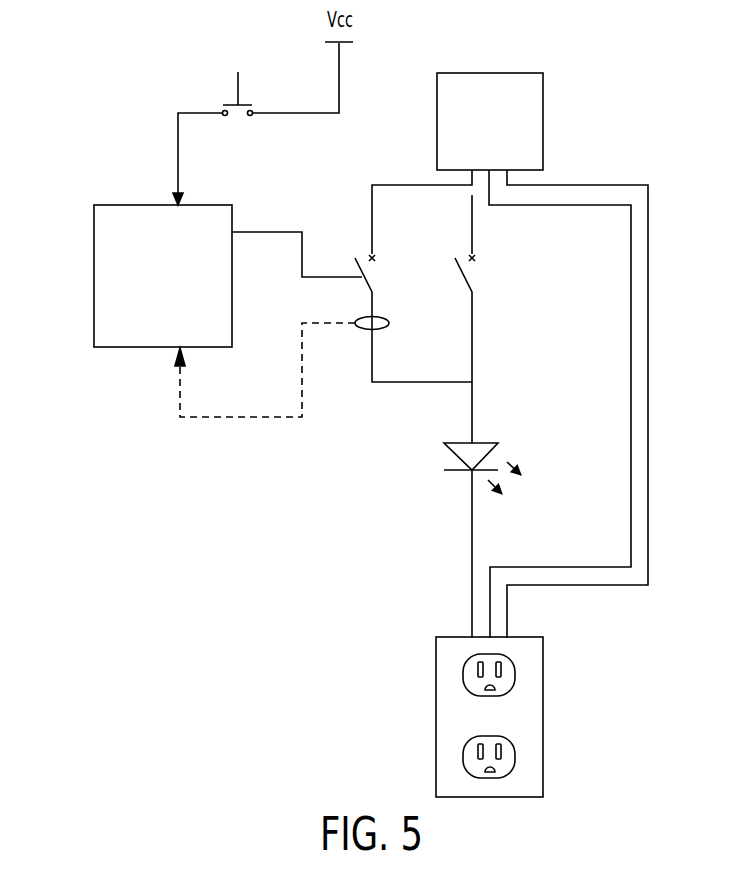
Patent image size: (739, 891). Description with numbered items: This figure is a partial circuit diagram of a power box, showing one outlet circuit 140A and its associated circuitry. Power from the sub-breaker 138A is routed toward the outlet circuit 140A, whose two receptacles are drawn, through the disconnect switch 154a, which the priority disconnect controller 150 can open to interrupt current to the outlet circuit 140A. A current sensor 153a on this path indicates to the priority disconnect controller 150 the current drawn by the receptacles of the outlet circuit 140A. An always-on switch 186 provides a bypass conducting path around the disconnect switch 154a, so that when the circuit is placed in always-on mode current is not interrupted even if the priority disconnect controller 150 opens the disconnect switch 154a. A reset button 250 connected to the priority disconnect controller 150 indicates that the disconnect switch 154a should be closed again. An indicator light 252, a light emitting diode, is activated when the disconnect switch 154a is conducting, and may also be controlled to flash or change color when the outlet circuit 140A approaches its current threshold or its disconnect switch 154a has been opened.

The reset button 250 is at (238, 96).
The priority disconnect controller 150 is at (138, 348).
The sub-breaker 138A is at (545, 121).
The disconnect switch 154a is at (363, 247).
The current sensor 153a is at (390, 326).
The always-on switch 186 is at (478, 277).
The indicator light 252 is at (450, 450).
The outlet circuit 140A is at (547, 717).